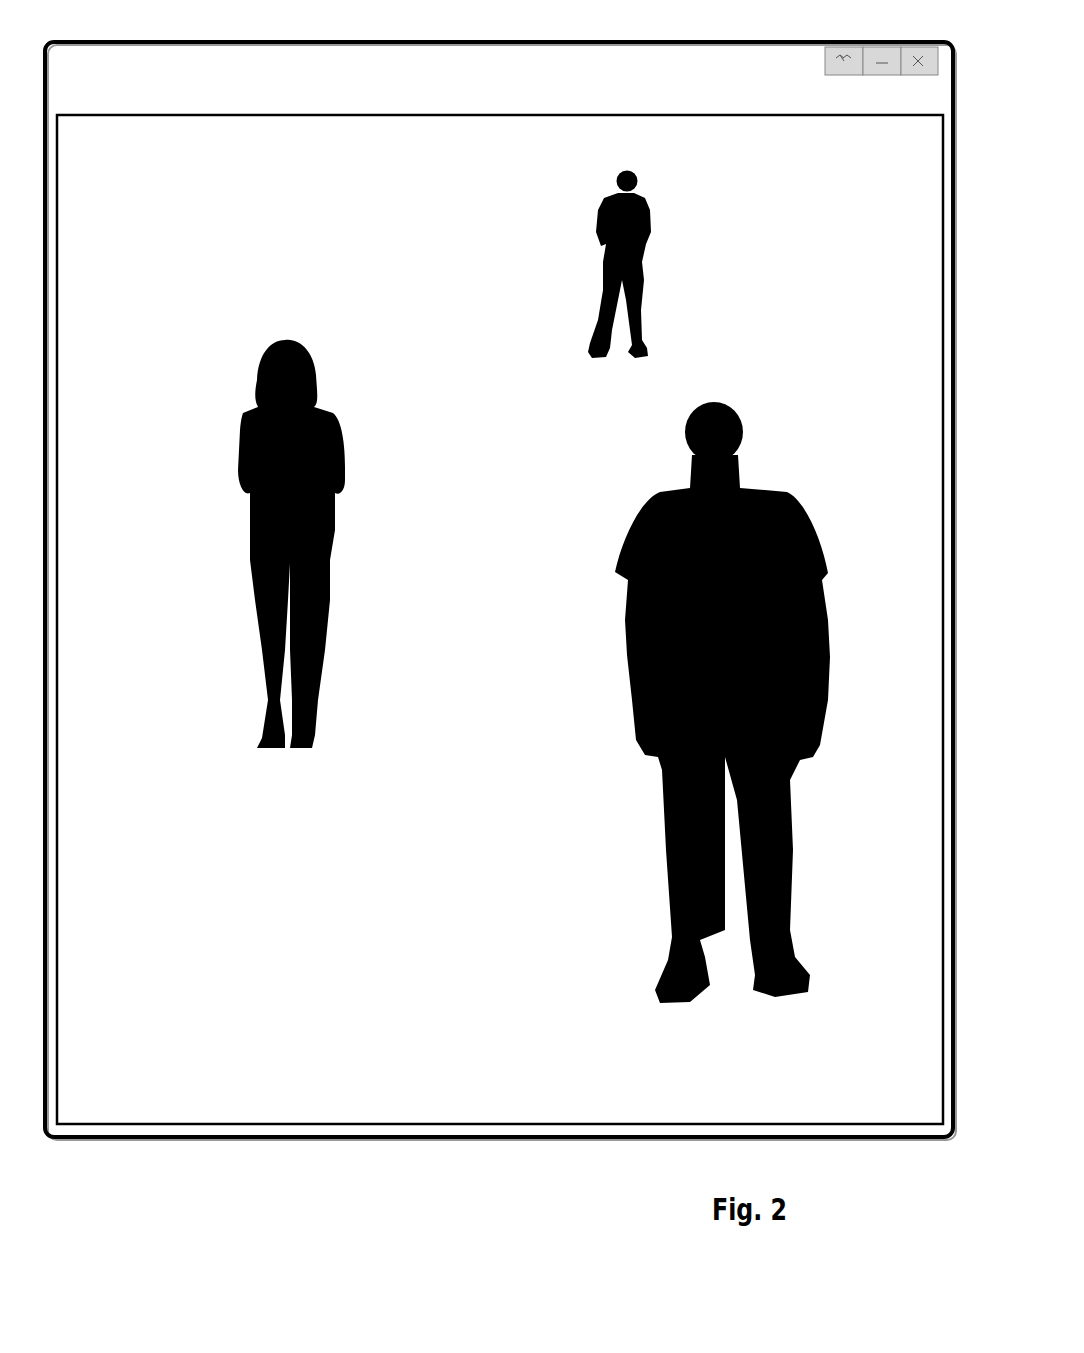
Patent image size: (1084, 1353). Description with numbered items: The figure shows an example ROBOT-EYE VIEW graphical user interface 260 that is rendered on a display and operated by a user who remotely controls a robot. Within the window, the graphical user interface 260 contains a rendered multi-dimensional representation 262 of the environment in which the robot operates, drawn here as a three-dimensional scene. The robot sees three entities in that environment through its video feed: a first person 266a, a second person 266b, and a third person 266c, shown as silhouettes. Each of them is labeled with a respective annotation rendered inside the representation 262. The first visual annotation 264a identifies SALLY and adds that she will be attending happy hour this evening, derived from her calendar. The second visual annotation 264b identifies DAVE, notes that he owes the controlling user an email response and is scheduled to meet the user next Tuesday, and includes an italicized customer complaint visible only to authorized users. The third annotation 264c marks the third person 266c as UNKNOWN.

The graphical user interface 260 is at (595, 42).
The multi-dimensional representation 262 is at (416, 198).
The first visual annotation 264a is at (231, 282).
The second visual annotation 264b is at (590, 741).
The third visual annotation 264c is at (562, 145).
The first person 266a is at (340, 444).
The second person 266b is at (786, 508).
The third person 266c is at (641, 285).